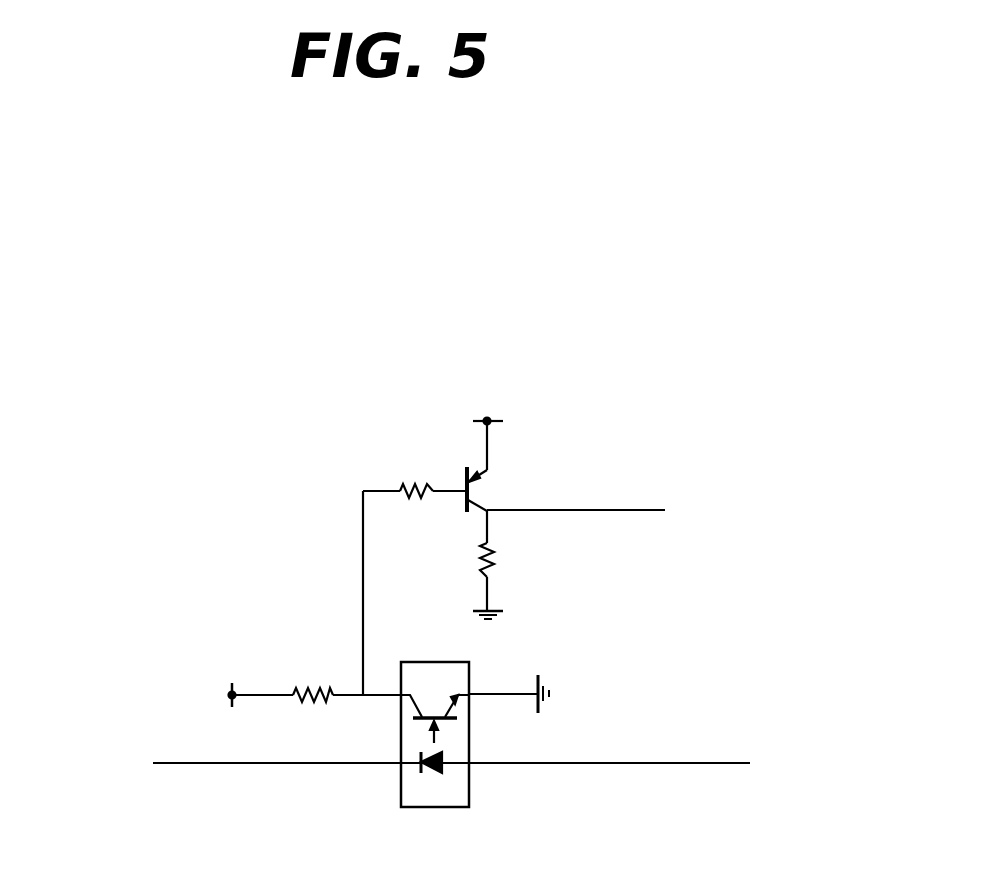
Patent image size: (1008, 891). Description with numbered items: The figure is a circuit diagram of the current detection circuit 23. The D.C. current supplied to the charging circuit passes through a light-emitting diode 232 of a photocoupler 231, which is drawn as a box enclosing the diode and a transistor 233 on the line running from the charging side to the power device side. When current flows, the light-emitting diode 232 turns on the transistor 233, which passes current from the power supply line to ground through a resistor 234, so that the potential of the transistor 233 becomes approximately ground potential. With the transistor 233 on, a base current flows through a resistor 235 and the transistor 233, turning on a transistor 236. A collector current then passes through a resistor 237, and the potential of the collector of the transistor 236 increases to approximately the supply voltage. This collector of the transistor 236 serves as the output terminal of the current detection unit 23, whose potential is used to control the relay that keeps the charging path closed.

The current detection circuit 23 is at (473, 347).
The photocoupler 231 is at (440, 808).
The light-emitting diode 232 is at (445, 766).
The transistor 233 is at (443, 688).
The resistor 234 is at (315, 709).
The resistor 235 is at (405, 485).
The transistor 236 is at (482, 492).
The resistor 237 is at (503, 561).